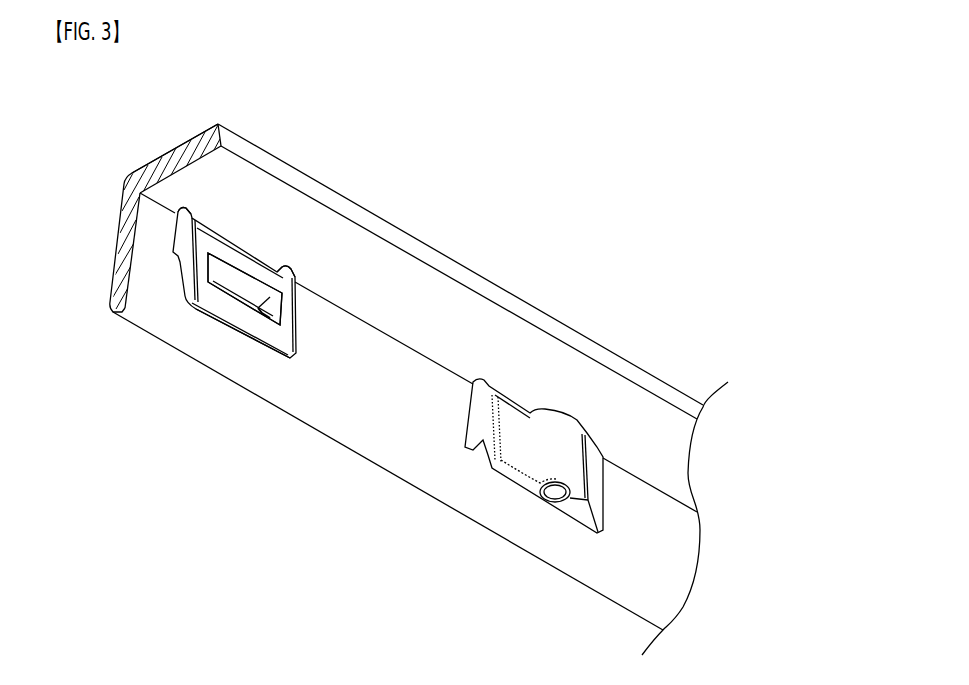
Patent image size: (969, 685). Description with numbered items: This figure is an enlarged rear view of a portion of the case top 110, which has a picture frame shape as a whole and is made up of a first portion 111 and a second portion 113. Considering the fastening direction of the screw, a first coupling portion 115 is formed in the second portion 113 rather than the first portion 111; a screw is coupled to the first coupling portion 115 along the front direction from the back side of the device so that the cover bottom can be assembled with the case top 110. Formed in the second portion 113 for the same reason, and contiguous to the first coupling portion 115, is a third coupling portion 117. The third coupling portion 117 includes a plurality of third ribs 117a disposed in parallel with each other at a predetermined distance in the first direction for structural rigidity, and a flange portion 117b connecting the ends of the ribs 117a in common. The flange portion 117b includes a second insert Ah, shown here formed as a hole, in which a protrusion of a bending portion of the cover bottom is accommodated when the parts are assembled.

The case top 110 is at (585, 207).
The first portion 111 is at (173, 162).
The second portion 113 is at (123, 219).
The first coupling portion 115 is at (559, 532).
The third coupling portion 117 is at (281, 386).
The third ribs 117a is at (177, 234).
The flange portion 117b is at (227, 323).
The second insert Ah is at (238, 278).